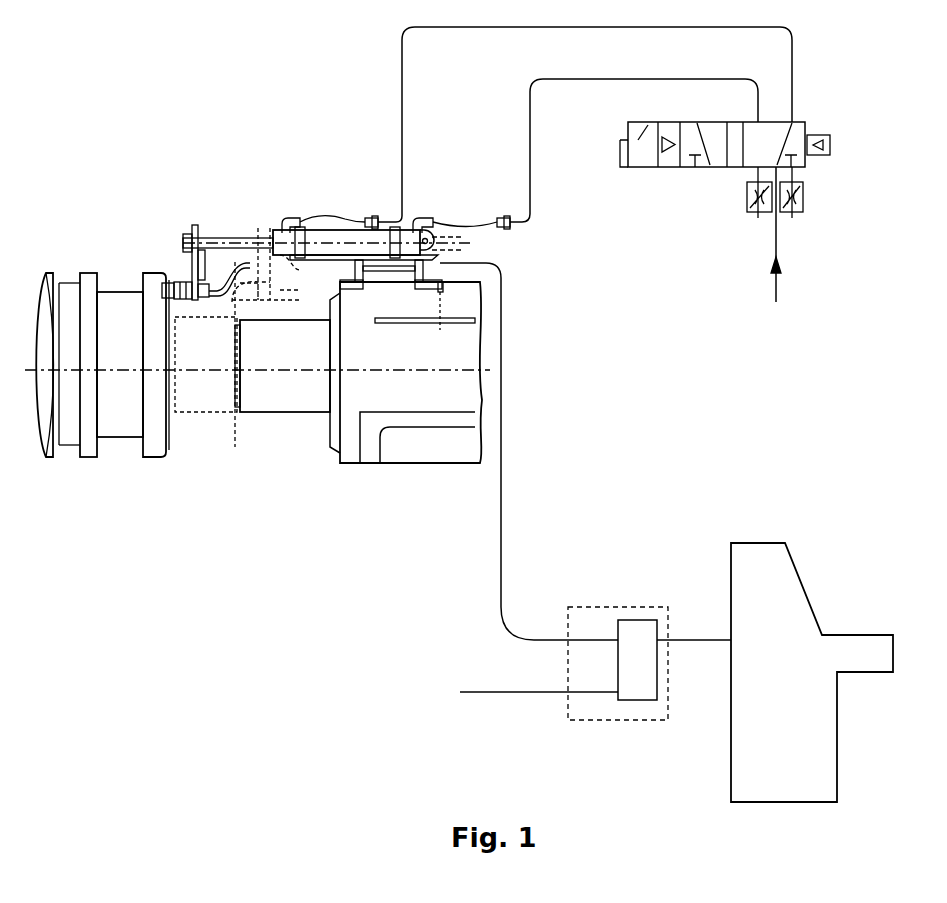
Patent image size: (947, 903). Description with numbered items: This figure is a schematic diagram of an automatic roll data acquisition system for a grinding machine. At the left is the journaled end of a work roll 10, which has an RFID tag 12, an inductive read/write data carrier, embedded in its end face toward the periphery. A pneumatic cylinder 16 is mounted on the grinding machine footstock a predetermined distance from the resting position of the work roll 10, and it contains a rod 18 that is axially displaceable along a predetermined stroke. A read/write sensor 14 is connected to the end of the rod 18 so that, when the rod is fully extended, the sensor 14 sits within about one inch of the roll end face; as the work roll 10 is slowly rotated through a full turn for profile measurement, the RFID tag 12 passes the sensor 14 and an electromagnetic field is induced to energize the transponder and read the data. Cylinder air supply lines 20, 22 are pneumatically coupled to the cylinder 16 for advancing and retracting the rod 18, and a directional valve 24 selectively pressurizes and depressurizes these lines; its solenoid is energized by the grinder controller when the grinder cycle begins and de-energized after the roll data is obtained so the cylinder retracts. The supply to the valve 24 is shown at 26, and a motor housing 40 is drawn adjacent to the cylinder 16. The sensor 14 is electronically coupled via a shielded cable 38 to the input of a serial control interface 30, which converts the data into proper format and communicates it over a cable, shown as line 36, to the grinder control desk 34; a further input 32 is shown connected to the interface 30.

The work roll 10 is at (70, 286).
The RFID tag 12 is at (158, 281).
The read/write sensor 14 is at (199, 302).
The pneumatic cylinder 16 is at (273, 229).
The rod 18 is at (214, 236).
The cylinder air supply line 20 is at (401, 117).
The cylinder air supply line 22 is at (530, 168).
The directional valve 24 is at (800, 121).
The air supply 26 is at (777, 286).
The serial control interface 30 is at (638, 699).
The control input line 32 is at (490, 691).
The grinder control desk 34 is at (806, 613).
The signal line 36 is at (699, 639).
The shielded cable 38 is at (503, 507).
The motor housing 40 is at (340, 454).